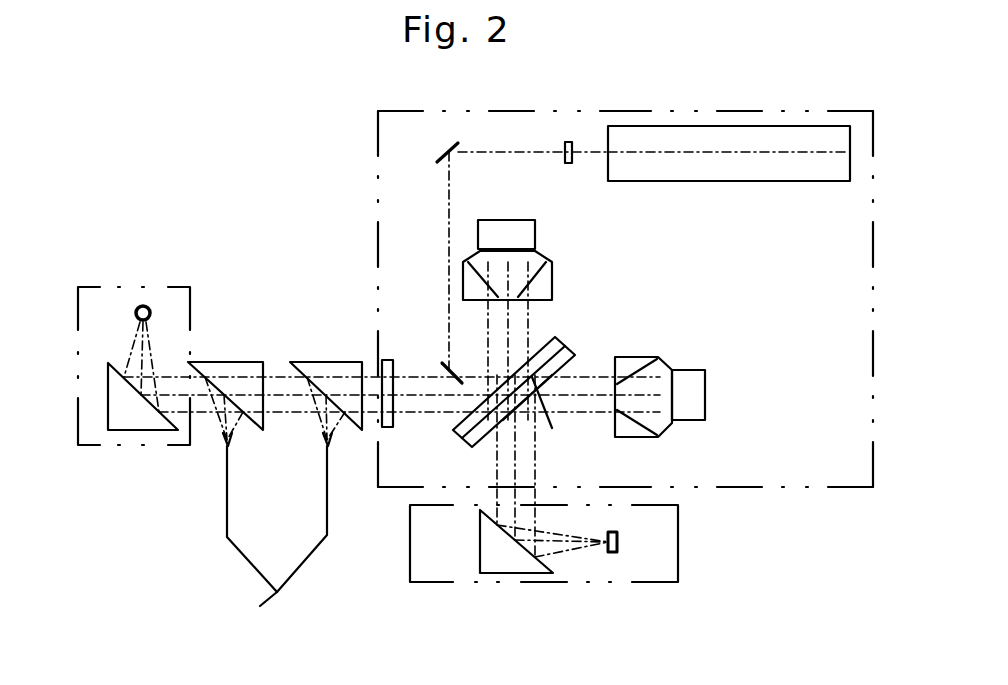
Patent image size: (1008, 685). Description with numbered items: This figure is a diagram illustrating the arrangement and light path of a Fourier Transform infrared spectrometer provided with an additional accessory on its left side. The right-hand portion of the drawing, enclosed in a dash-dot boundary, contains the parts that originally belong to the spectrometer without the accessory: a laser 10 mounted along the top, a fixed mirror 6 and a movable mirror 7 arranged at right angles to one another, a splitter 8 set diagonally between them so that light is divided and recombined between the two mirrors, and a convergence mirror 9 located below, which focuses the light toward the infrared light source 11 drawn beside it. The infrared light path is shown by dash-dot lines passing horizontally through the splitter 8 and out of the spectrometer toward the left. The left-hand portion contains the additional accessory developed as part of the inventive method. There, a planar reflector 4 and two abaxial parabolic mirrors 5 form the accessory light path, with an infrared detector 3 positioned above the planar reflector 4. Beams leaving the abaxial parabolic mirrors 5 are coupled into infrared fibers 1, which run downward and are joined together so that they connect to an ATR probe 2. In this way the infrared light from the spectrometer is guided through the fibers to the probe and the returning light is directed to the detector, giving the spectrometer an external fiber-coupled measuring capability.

The infrared fibers 1 is at (227, 492).
The ATR probe 2 is at (260, 606).
The infrared detector 3 is at (148, 307).
The planar reflector 4 is at (117, 408).
The abaxial parabolic mirrors 5 is at (318, 365).
The fixed mirror 6 is at (517, 237).
The movable mirror 7 is at (695, 413).
The splitter 8 is at (565, 346).
The convergence mirror 9 is at (517, 573).
The laser 10 is at (798, 123).
The infrared light source 11 is at (617, 552).